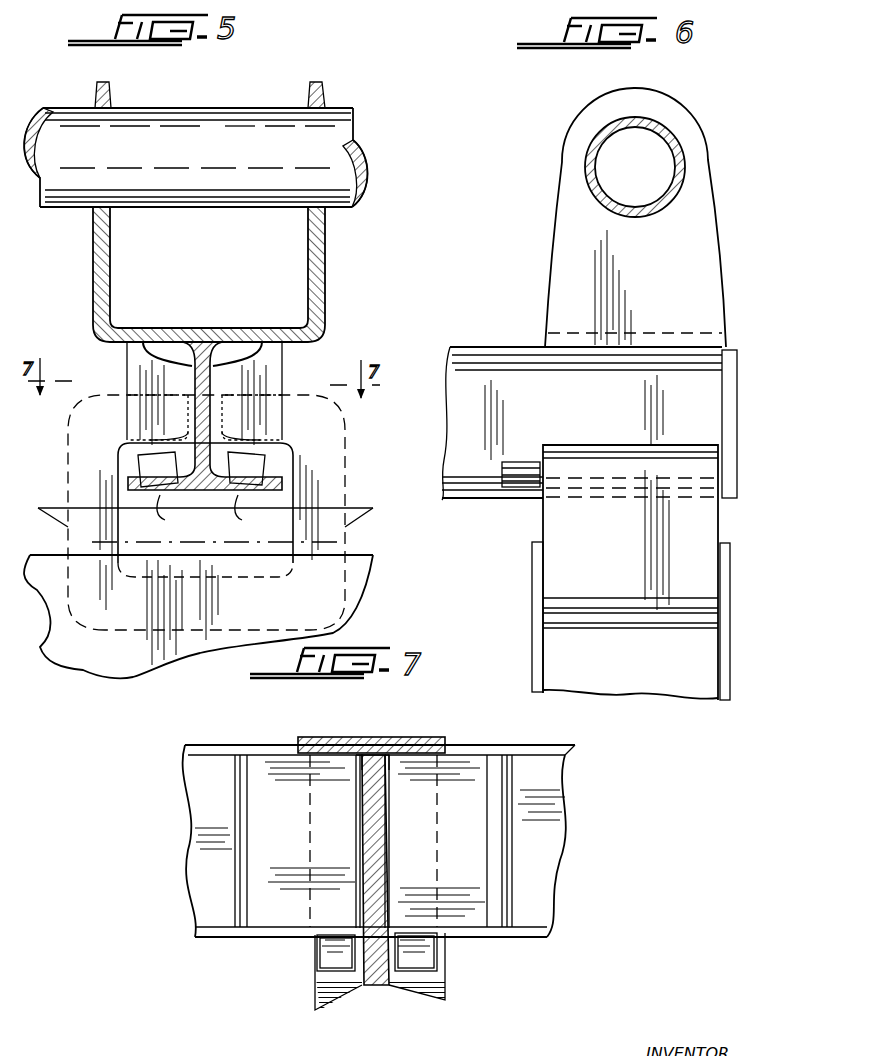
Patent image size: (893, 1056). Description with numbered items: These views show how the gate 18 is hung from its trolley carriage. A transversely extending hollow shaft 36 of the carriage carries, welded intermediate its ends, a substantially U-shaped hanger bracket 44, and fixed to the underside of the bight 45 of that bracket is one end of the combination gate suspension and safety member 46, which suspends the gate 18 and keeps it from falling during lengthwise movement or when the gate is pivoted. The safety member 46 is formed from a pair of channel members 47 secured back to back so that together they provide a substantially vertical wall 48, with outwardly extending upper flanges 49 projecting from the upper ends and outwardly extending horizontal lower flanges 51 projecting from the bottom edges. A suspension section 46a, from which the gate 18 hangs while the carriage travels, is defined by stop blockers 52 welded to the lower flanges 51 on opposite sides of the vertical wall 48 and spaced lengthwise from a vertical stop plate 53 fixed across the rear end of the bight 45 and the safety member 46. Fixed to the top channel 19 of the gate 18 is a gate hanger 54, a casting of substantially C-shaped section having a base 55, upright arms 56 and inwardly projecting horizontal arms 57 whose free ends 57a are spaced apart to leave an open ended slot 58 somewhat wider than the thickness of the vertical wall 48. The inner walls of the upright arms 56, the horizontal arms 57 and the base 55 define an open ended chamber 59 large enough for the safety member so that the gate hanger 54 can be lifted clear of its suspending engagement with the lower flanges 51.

In FIG. 7, the gate 18 is at (542, 746).
In FIG. 6, the top channel 19 is at (532, 628).
In FIG. 7, the top channel 19 is at (535, 913).
In FIG. 5, the hollow shaft 36 is at (336, 137).
In FIG. 6, the hollow shaft 36 is at (585, 163).
In FIG. 5, the hanger bracket 44 is at (95, 245).
In FIG. 6, the hanger bracket 44 is at (695, 210).
In FIG. 5, the bight 45 is at (263, 340).
In FIG. 5, the combination gate suspension and safety member 46 is at (190, 381).
In FIG. 6, the combination gate suspension and safety member 46 is at (491, 502).
In FIG. 7, the combination gate suspension and safety member 46 is at (318, 985).
In FIG. 6, the suspension section 46a is at (666, 478).
In FIG. 7, the suspension section 46a is at (325, 928).
In FIG. 5, the channel members 47 is at (185, 370).
In FIG. 5, the vertical wall 48 is at (228, 347).
In FIG. 7, the vertical wall 48 is at (378, 988).
In FIG. 5, the upper flanges 49 is at (182, 345).
In FIG. 5, the lower flanges 51 is at (212, 513).
In FIG. 6, the lower flanges 51 is at (460, 488).
In FIG. 5, the stop blockers 52 is at (150, 462).
In FIG. 6, the stop blockers 52 is at (522, 465).
In FIG. 7, the stop blockers 52 is at (332, 955).
In FIG. 6, the vertical stop plate 53 is at (737, 420).
In FIG. 7, the vertical stop plate 53 is at (430, 740).
In FIG. 5, the gate hanger 54 is at (88, 522).
In FIG. 6, the gate hanger 54 is at (722, 524).
In FIG. 7, the gate hanger 54 is at (232, 890).
In FIG. 5, the base 55 is at (120, 632).
In FIG. 5, the upright arms 56 is at (83, 490).
In FIG. 5, the horizontal arms 57 is at (275, 455).
In FIG. 6, the horizontal arms 57 is at (612, 445).
In FIG. 7, the horizontal arms 57 is at (272, 765).
In FIG. 5, the free ends 57a is at (148, 438).
In FIG. 7, the free ends 57a is at (387, 770).
In FIG. 5, the open ended slot 58 is at (217, 462).
In FIG. 7, the open ended slot 58 is at (367, 986).
In FIG. 5, the open ended chamber 59 is at (300, 528).